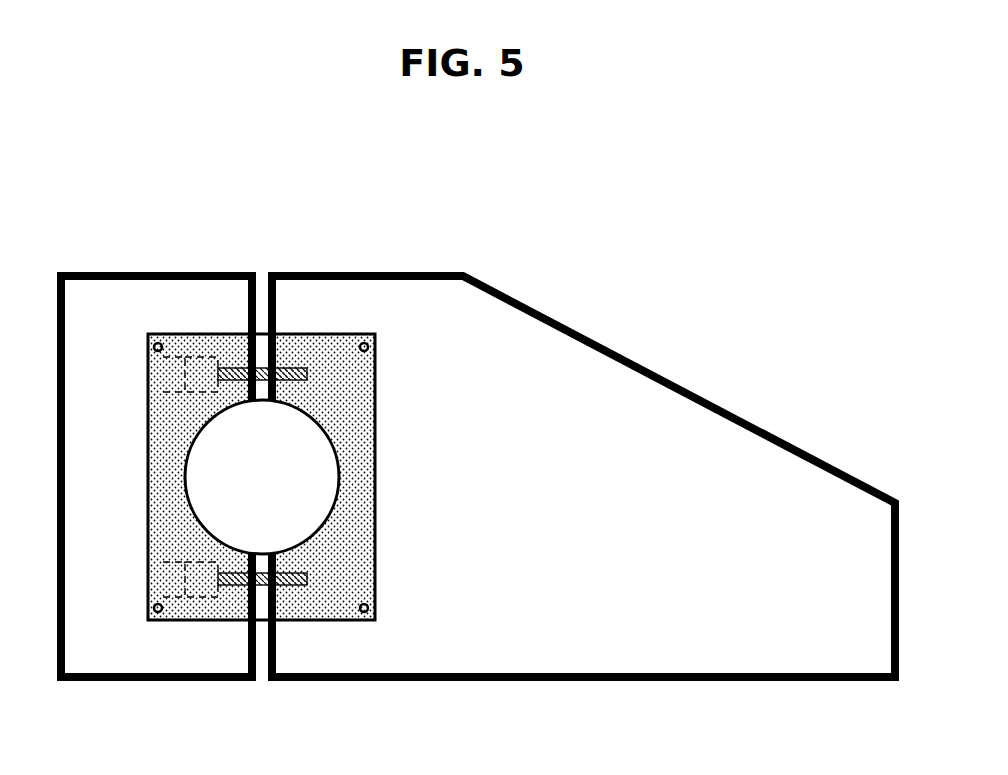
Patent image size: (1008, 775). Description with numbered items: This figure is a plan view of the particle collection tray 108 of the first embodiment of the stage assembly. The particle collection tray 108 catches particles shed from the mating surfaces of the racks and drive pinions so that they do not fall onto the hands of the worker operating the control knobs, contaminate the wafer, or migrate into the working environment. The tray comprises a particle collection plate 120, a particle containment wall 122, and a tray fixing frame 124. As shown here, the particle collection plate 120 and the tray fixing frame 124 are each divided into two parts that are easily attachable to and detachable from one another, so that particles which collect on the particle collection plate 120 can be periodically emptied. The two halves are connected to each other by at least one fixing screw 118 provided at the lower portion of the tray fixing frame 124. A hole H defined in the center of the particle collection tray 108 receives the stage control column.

The particle collection tray 108 is at (478, 455).
The fixing screw 118 is at (158, 372).
The particle collection plate 120 is at (178, 288).
The particle containment wall 122 is at (137, 681).
The tray fixing frame 124 is at (366, 334).
The hole H is at (305, 432).